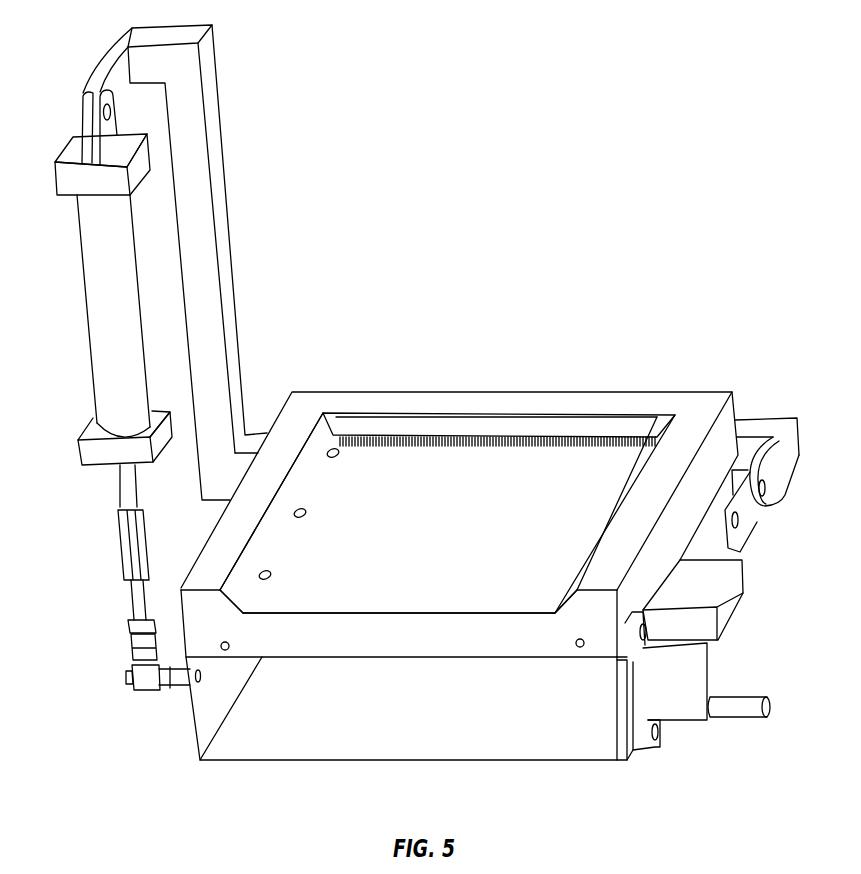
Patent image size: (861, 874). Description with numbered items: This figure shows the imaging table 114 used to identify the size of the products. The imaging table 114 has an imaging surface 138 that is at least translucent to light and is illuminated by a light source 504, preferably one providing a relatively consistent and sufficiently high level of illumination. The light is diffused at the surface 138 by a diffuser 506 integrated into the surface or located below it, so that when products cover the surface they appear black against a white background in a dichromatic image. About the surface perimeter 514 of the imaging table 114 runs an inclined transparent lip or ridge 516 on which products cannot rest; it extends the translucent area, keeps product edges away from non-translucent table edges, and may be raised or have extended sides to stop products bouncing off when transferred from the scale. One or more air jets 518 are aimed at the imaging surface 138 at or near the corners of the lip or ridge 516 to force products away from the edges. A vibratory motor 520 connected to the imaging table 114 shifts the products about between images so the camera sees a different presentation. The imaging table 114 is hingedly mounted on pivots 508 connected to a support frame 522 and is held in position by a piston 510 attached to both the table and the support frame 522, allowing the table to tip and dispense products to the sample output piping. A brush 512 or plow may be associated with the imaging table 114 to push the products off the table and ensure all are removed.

The imaging table 114 is at (597, 142).
The imaging surface 138 is at (485, 525).
The light source 504 is at (243, 725).
The diffuser 506 is at (575, 745).
The pivots 508 is at (766, 489).
The piston 510 is at (100, 330).
The brush 512 is at (505, 428).
The surface perimeter 514 is at (253, 600).
The inclined transparent lip or ridge 516 is at (280, 528).
The air jets 518 is at (342, 456).
The vibratory motor 520 is at (730, 598).
The support frame 522 is at (213, 105).